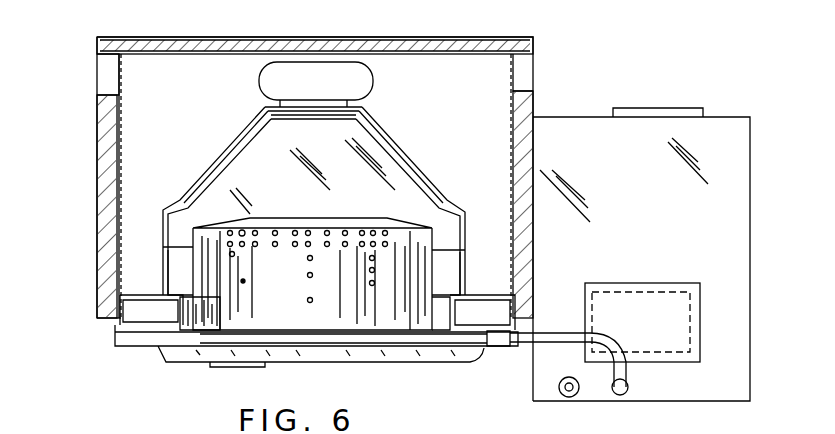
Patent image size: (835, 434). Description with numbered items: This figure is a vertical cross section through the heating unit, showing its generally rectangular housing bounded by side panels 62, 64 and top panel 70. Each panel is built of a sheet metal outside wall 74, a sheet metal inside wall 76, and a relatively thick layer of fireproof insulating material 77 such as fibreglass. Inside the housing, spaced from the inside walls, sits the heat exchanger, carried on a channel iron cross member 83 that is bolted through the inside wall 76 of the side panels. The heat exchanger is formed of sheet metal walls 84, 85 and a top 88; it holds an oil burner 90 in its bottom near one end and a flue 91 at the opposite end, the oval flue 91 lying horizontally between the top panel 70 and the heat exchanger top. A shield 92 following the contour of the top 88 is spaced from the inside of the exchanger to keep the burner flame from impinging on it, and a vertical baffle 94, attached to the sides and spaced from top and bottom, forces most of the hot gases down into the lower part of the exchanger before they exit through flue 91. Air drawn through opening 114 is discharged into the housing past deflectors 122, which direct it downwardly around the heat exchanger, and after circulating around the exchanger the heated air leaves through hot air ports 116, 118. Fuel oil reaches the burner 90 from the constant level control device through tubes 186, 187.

The side panel 62 is at (100, 218).
The side panel 64 is at (555, 212).
The top panel 70 is at (395, 45).
The outside wall 74 is at (100, 148).
The inside wall 76 is at (123, 138).
The insulating material 77 is at (117, 172).
The cross member 83 is at (147, 297).
The wall 84 is at (163, 234).
The wall 85 is at (467, 234).
The top 88 is at (355, 112).
The oil burner 90 is at (330, 292).
The flue 91 is at (262, 80).
The shield 92 is at (222, 158).
The vertical baffle 94 is at (405, 180).
The opening 114 is at (670, 112).
The hot air port 116 is at (107, 80).
The hot air port 118 is at (528, 78).
The deflectors 122 is at (505, 160).
The tube 186 is at (590, 338).
The tube 187 is at (458, 336).